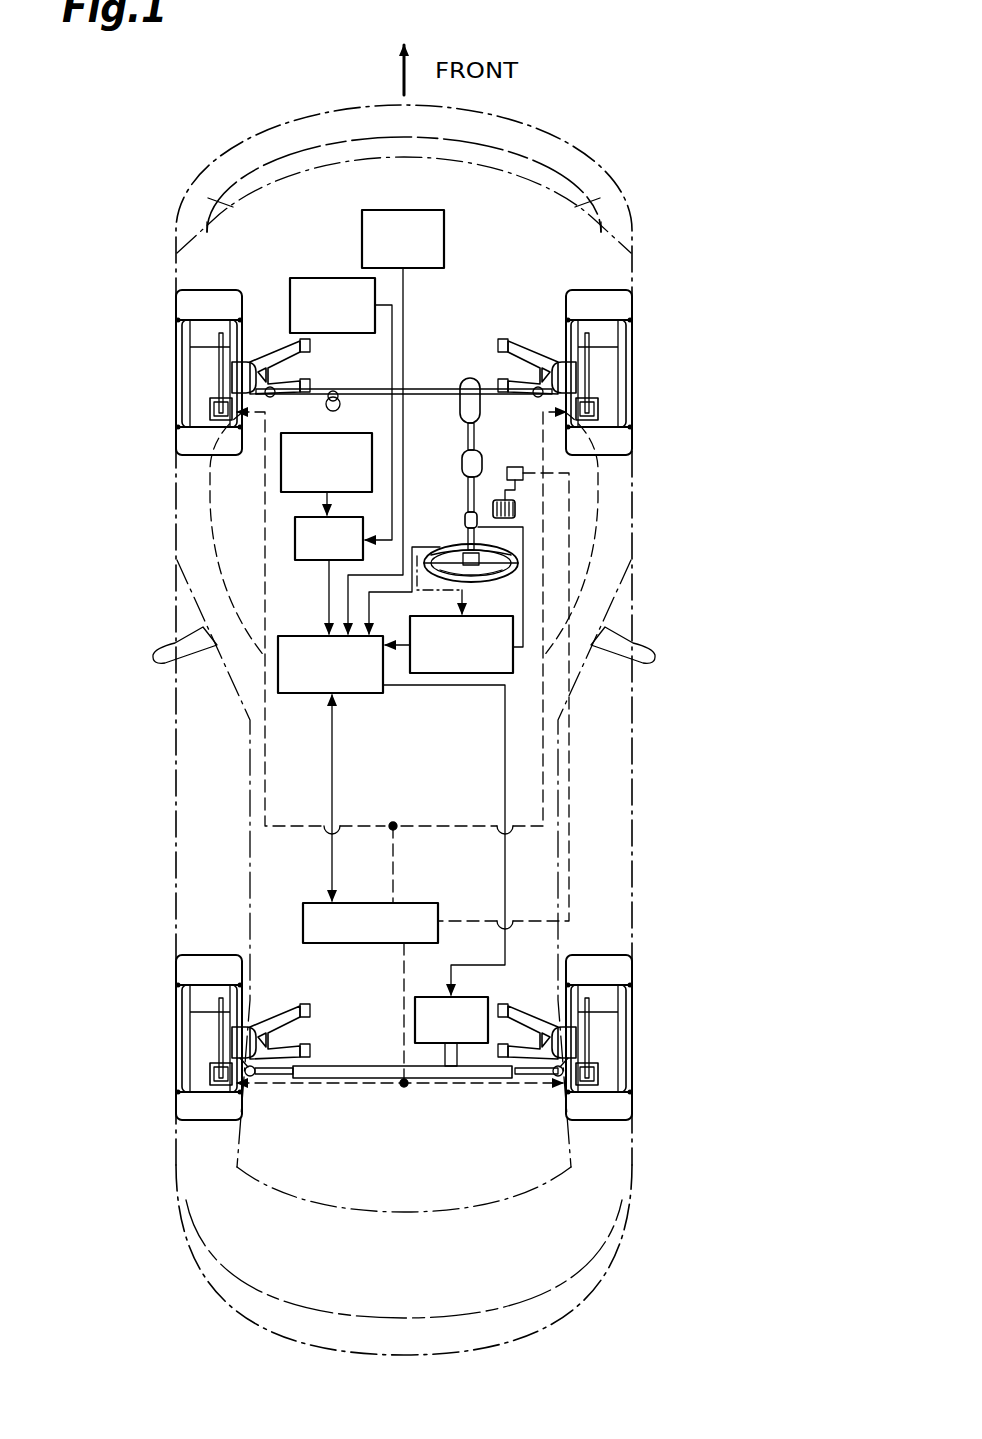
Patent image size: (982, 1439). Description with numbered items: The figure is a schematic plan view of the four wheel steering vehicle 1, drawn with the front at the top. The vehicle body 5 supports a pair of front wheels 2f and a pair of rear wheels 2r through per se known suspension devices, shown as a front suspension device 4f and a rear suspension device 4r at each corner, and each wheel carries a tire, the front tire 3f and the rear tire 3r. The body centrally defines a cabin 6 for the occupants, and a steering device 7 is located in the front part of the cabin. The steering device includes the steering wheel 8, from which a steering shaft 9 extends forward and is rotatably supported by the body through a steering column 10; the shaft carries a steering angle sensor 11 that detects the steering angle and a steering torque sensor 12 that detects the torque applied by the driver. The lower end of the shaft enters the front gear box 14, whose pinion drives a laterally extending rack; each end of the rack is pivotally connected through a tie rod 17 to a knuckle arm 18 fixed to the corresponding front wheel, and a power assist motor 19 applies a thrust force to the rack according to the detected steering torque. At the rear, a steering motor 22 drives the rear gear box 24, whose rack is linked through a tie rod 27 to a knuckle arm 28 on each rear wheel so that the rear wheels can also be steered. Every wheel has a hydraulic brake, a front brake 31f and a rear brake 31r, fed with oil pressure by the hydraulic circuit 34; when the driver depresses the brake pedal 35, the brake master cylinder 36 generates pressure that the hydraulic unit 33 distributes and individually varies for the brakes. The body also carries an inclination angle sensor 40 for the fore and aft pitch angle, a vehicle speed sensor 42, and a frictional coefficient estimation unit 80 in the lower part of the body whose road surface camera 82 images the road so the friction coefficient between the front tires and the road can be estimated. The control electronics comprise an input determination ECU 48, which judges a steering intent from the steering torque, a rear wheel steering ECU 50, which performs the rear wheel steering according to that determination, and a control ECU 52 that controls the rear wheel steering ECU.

The four wheel steering vehicle 1 is at (172, 152).
The vehicle body 5 is at (578, 143).
The frictional coefficient estimation unit 80 is at (290, 272).
The road surface camera 82 is at (322, 278).
The vehicle speed sensor 42 is at (423, 210).
The front suspension device 4f is at (248, 360).
The front wheel 2f is at (178, 330).
The front wheel tire 3f is at (176, 450).
The knuckle arm 18 is at (215, 372).
The front hydraulic brake 31f is at (210, 410).
The tie rod 17 is at (535, 362).
The front gear box 14 is at (430, 388).
The power assist motor 19 is at (338, 406).
The steering column 10 is at (462, 462).
The steering shaft 9 is at (468, 487).
The steering angle sensor 11 is at (462, 548).
The brake master cylinder 36 is at (515, 467).
The brake pedal 35 is at (515, 508).
The steering torque sensor 12 is at (500, 533).
The steering device 7 is at (540, 562).
The steering wheel 8 is at (507, 578).
The cabin 6 is at (500, 613).
The inclination angle sensor 40 is at (302, 493).
The control ECU 52 is at (312, 560).
The rear wheel steering ECU 50 is at (355, 693).
The input determination ECU 48 is at (468, 673).
The hydraulic circuit 34 is at (547, 766).
The hydraulic unit 33 is at (345, 943).
The steering motor 22 is at (432, 997).
The rear suspension device 4r is at (248, 1025).
The rear wheel tire 3r is at (178, 988).
The rear wheel 2r is at (178, 1020).
The knuckle arm 28 is at (215, 1052).
The rear hydraulic brake 31r is at (210, 1090).
The tie rod 27 is at (283, 1074).
The rear gear box 24 is at (442, 1078).